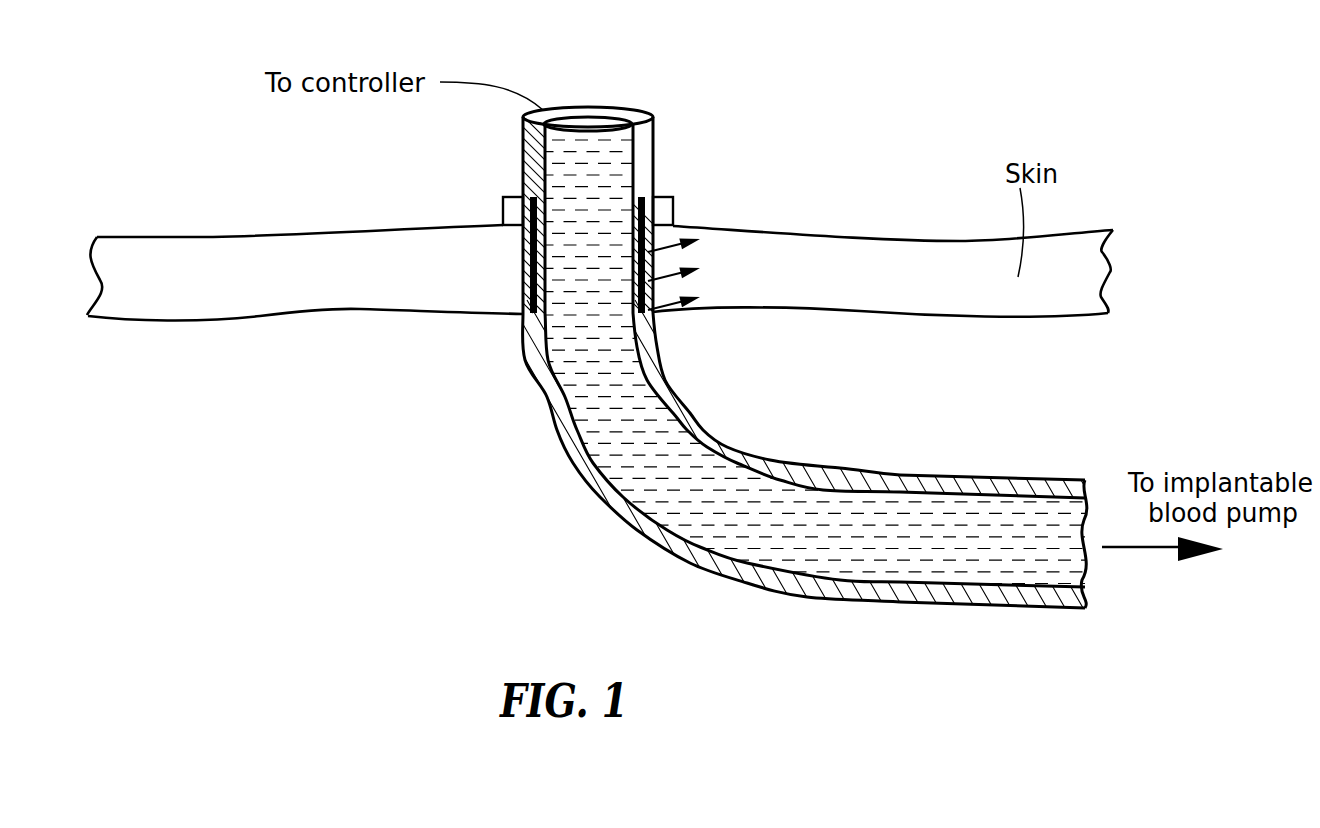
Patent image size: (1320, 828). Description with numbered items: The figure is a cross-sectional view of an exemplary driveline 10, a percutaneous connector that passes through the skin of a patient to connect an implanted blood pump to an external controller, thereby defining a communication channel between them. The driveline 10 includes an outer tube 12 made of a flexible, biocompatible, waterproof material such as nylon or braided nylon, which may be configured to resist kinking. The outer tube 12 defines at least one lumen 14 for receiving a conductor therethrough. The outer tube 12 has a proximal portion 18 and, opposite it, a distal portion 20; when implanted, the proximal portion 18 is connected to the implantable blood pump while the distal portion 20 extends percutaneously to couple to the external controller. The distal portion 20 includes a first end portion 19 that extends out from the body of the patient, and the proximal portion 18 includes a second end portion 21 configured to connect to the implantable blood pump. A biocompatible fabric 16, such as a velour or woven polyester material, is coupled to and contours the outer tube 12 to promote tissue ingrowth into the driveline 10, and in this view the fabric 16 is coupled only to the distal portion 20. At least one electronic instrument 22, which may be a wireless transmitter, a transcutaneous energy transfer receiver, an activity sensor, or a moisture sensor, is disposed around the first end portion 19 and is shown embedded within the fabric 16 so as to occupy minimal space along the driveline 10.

The driveline 10 is at (680, 136).
The outer tube 12 is at (640, 137).
The lumen 14 is at (575, 140).
The biocompatible fabric 16 is at (657, 332).
The proximal portion 18 is at (995, 606).
The first end portion 19 is at (673, 200).
The distal portion 20 is at (523, 152).
The second end portion 21 is at (521, 229).
The electronic instrument 22 is at (523, 279).